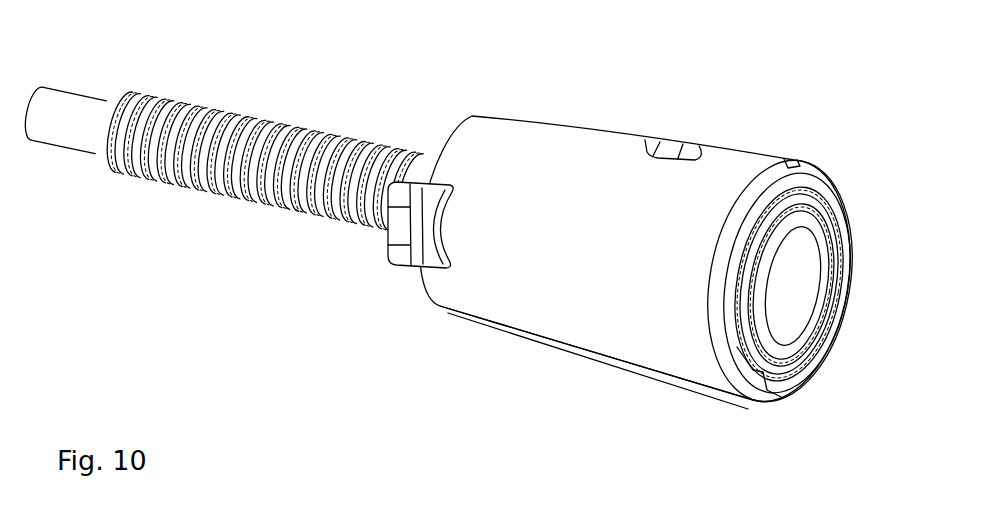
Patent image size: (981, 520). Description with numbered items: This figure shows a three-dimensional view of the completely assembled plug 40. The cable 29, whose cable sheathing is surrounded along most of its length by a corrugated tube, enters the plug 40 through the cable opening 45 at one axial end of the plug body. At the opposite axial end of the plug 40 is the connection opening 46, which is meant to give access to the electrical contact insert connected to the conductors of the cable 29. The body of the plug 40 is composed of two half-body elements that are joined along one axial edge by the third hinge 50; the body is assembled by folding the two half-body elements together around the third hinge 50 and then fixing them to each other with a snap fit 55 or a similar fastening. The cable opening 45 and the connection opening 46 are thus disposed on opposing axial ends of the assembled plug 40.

The cable 29 is at (220, 119).
The plug 40 is at (532, 237).
The cable opening 45 is at (425, 138).
The connection opening 46 is at (799, 345).
The third hinge 50 is at (582, 355).
The snap fit 55 is at (603, 125).